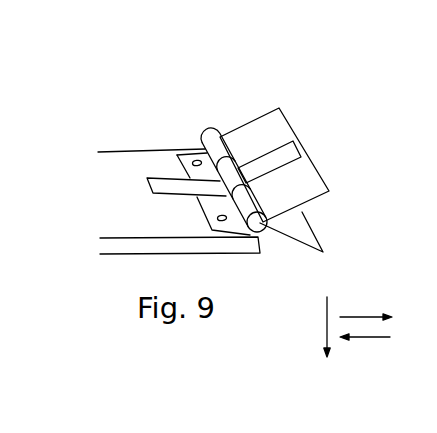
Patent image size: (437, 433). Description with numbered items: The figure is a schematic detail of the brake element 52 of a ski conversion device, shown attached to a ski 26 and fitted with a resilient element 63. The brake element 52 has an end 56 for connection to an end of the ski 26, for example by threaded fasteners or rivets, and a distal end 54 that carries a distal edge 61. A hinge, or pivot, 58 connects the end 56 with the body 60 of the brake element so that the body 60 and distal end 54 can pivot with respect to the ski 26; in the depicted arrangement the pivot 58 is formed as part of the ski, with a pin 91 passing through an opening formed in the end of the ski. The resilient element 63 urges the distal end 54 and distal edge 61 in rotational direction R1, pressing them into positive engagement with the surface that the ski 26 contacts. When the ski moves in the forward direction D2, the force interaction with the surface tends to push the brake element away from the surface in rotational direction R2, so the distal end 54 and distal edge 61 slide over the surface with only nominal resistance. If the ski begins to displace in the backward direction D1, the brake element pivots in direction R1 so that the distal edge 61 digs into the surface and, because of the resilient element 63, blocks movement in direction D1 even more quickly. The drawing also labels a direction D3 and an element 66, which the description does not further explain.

The ski 26 is at (110, 140).
The brake element 52 is at (251, 109).
The distal end 54 is at (334, 212).
The end 56 is at (231, 238).
The hinge 58 is at (211, 124).
The body 60 is at (298, 127).
The distal edge 61 is at (318, 236).
The resilient element 63 is at (294, 156).
The mounting member 66 is at (33, 432).
The pin 91 is at (258, 224).
The rotational direction R1 is at (195, 108).
The rotational direction R2 is at (161, 104).
The backward direction D1 is at (362, 316).
The forward direction D2 is at (363, 338).
The third direction D3 is at (327, 322).